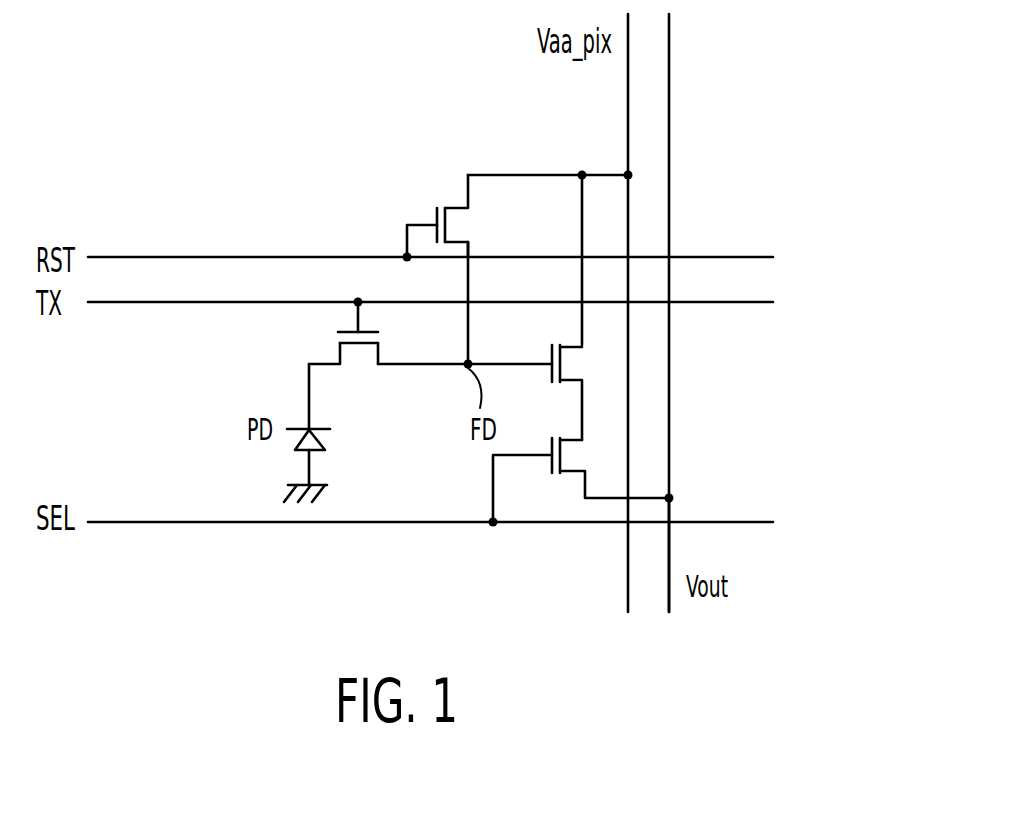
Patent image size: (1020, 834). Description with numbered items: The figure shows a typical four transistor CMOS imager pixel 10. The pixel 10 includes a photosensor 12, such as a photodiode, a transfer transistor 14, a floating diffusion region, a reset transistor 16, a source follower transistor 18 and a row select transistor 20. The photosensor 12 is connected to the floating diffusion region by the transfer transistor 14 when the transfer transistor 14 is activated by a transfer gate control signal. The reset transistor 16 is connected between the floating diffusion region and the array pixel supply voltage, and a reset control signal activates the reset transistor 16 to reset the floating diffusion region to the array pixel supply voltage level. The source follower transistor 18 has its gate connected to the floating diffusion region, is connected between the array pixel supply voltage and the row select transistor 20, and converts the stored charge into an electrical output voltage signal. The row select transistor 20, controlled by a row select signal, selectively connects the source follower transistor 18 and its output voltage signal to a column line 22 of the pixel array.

The pixel 10 is at (160, 44).
The photosensor 12 is at (322, 436).
The transfer transistor 14 is at (338, 352).
The reset transistor 16 is at (455, 204).
The source follower transistor 18 is at (565, 358).
The row select transistor 20 is at (565, 452).
The column line 22 is at (672, 568).